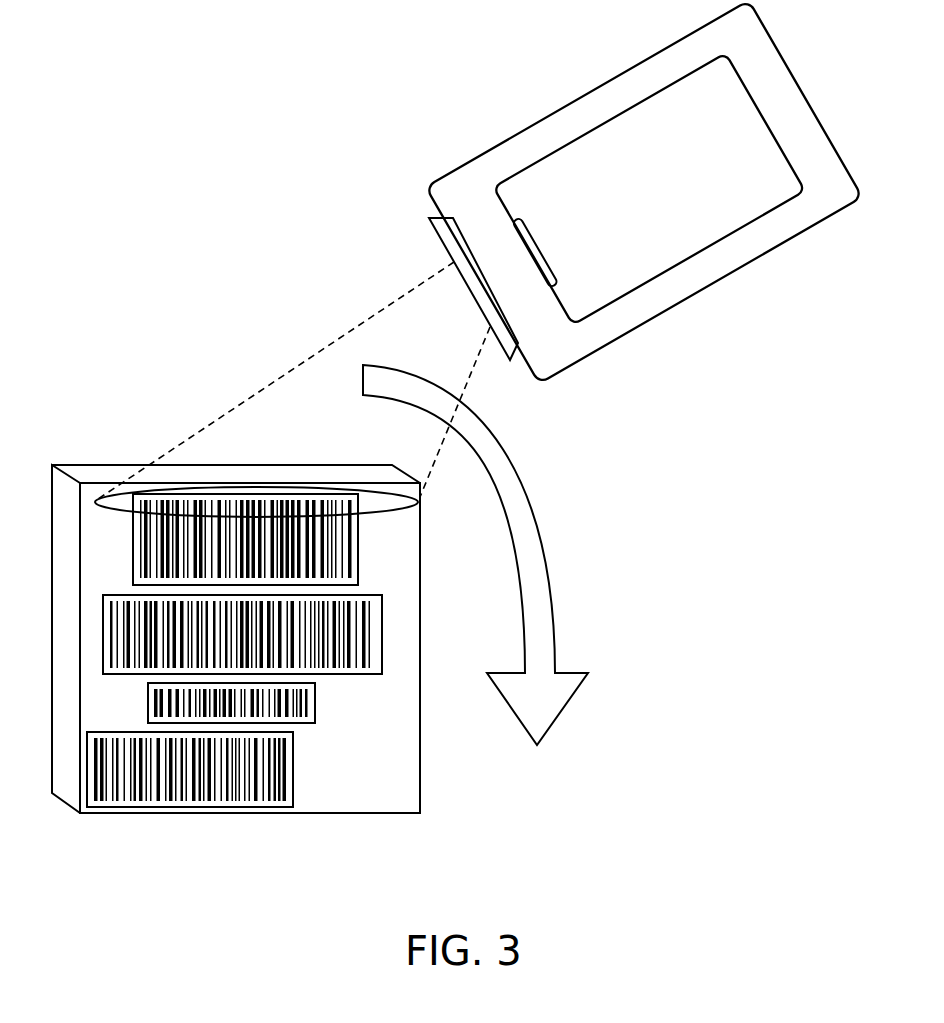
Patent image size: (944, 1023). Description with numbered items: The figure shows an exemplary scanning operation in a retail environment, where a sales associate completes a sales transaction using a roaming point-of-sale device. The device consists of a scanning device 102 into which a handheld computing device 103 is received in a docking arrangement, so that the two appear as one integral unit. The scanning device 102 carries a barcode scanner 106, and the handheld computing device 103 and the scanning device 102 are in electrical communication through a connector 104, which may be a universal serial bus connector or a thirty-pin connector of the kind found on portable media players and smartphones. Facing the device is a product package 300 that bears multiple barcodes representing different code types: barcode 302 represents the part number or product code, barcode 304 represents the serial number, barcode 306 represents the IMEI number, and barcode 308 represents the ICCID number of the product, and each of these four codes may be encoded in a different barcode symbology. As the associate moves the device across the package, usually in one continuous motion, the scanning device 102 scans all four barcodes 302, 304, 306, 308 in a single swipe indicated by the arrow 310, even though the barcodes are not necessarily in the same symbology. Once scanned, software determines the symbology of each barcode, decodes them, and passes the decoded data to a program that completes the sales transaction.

The scanning device 102 is at (638, 333).
The handheld computing device 103 is at (728, 238).
The connector 104 is at (523, 230).
The barcode scanner 106 is at (435, 232).
The product package 300 is at (225, 814).
The barcode 302 is at (360, 550).
The barcode 304 is at (383, 633).
The barcode 306 is at (315, 693).
The barcode 308 is at (293, 760).
The arrow 310 is at (552, 540).